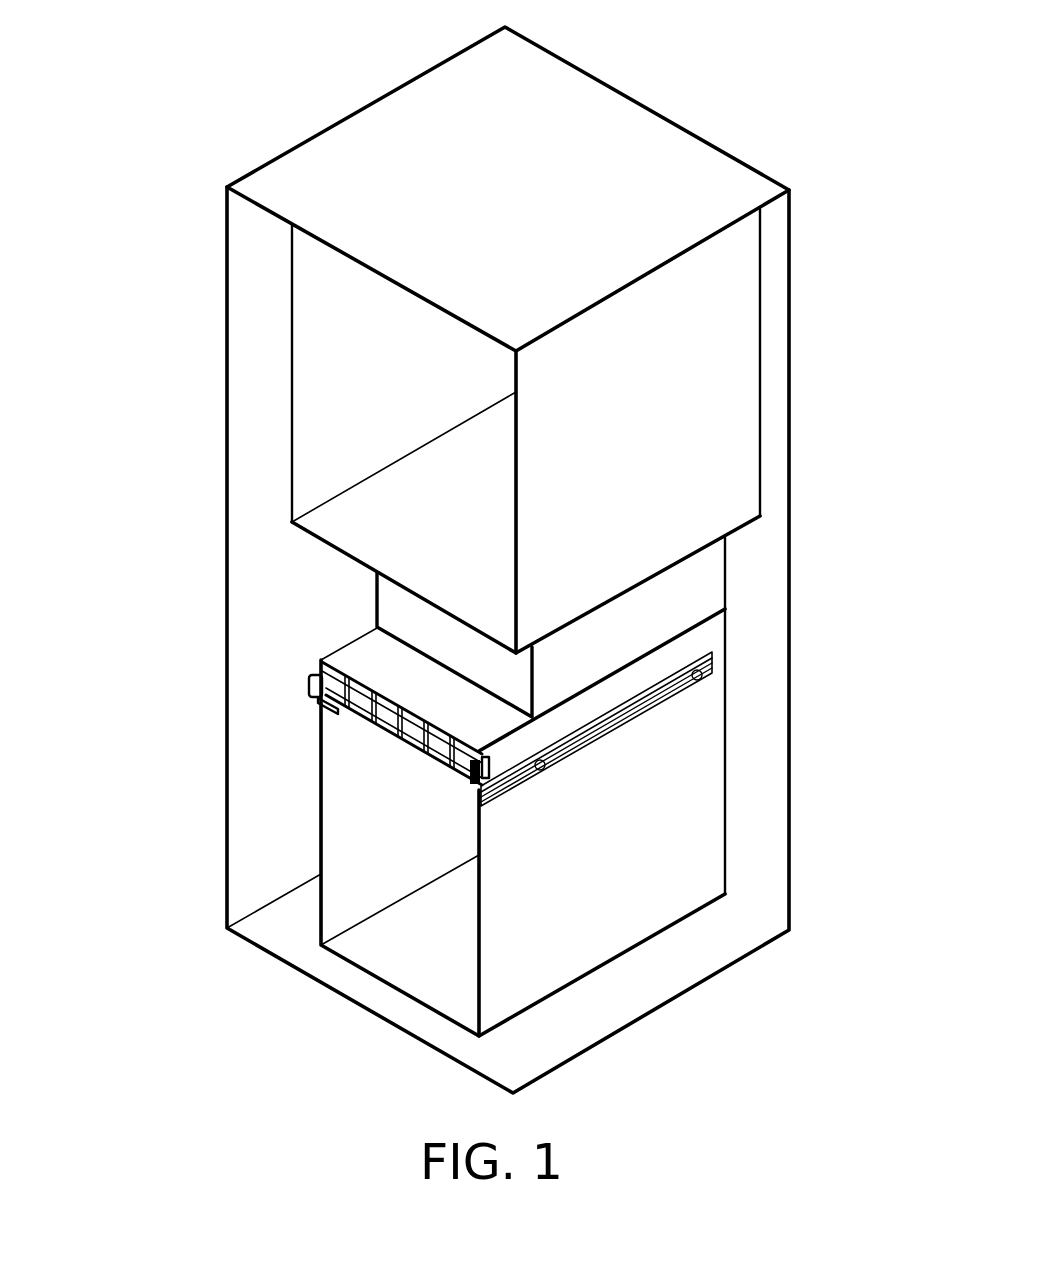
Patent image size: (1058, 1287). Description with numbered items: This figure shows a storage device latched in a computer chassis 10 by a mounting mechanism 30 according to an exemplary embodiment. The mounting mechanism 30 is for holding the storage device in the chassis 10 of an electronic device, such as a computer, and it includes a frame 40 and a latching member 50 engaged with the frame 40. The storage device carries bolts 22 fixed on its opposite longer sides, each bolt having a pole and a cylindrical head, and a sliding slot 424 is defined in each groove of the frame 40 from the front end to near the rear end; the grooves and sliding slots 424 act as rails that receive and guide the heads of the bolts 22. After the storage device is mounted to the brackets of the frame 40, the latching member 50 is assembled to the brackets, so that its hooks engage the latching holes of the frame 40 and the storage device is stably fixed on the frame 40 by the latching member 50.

The chassis 10 is at (267, 741).
The bolts 22 is at (689, 729).
The sliding slot 424 is at (632, 708).
The mounting mechanism 30 is at (396, 822).
The frame 40 is at (522, 882).
The latching member 50 is at (418, 728).